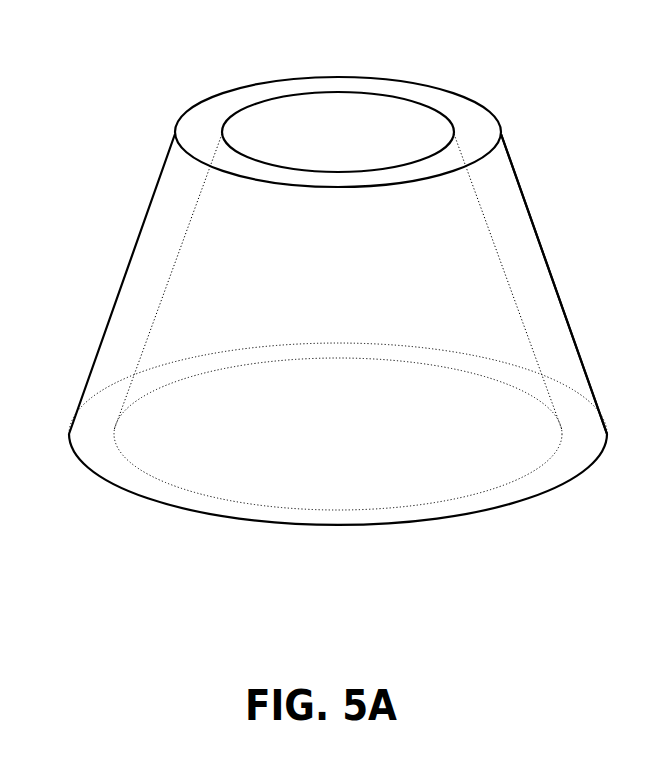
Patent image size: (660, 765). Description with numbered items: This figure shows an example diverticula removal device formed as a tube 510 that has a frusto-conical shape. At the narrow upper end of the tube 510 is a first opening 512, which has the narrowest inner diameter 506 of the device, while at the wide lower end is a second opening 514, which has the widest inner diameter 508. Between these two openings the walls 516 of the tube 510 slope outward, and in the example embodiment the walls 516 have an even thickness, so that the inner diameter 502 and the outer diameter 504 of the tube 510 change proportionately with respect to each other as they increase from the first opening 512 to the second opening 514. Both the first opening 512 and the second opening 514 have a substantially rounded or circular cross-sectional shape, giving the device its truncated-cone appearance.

The tube 510 is at (337, 303).
The narrowest inner diameter 506 is at (325, 92).
The first opening 512 is at (385, 146).
The outer diameter 504 is at (541, 236).
The inner diameter 502 is at (497, 263).
The walls 516 is at (523, 289).
The widest inner diameter 508 is at (217, 502).
The second opening 514 is at (365, 468).